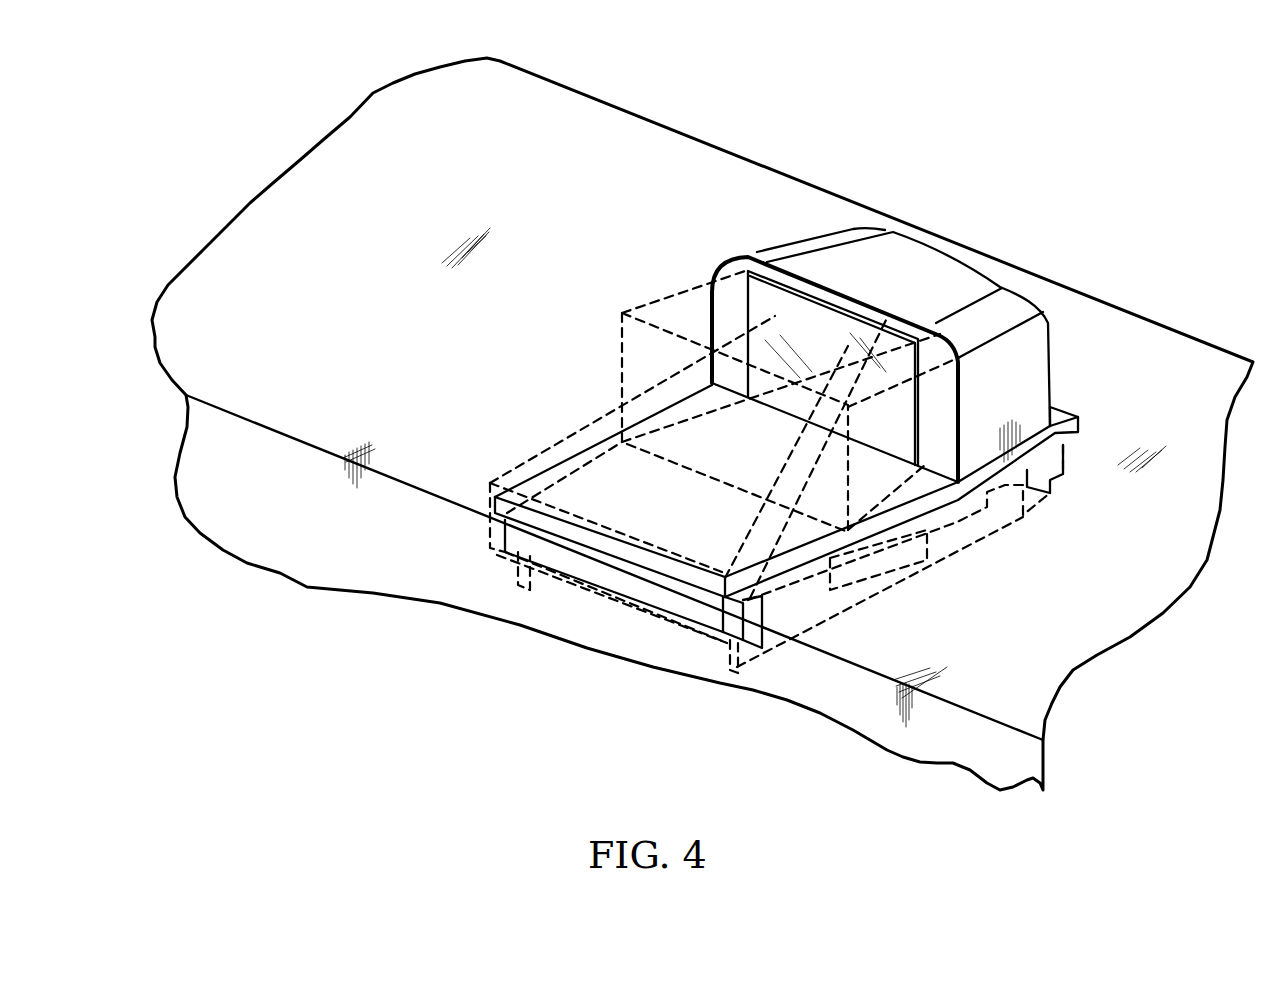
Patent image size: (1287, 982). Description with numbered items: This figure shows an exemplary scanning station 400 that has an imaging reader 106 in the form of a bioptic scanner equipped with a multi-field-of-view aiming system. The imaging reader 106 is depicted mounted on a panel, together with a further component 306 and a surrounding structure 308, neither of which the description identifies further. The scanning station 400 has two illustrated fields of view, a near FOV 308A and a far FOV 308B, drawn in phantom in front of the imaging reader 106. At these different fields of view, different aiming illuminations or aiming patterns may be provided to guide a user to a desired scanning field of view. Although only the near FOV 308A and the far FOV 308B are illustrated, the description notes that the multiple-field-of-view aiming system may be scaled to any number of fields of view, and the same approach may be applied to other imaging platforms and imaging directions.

The scanning station 400 is at (238, 105).
The imaging reader 106 is at (1028, 343).
The sensor window / lens 306 is at (887, 345).
The mounting frame 308 is at (445, 490).
The near FOV 308A is at (688, 294).
The far FOV 308B is at (633, 610).